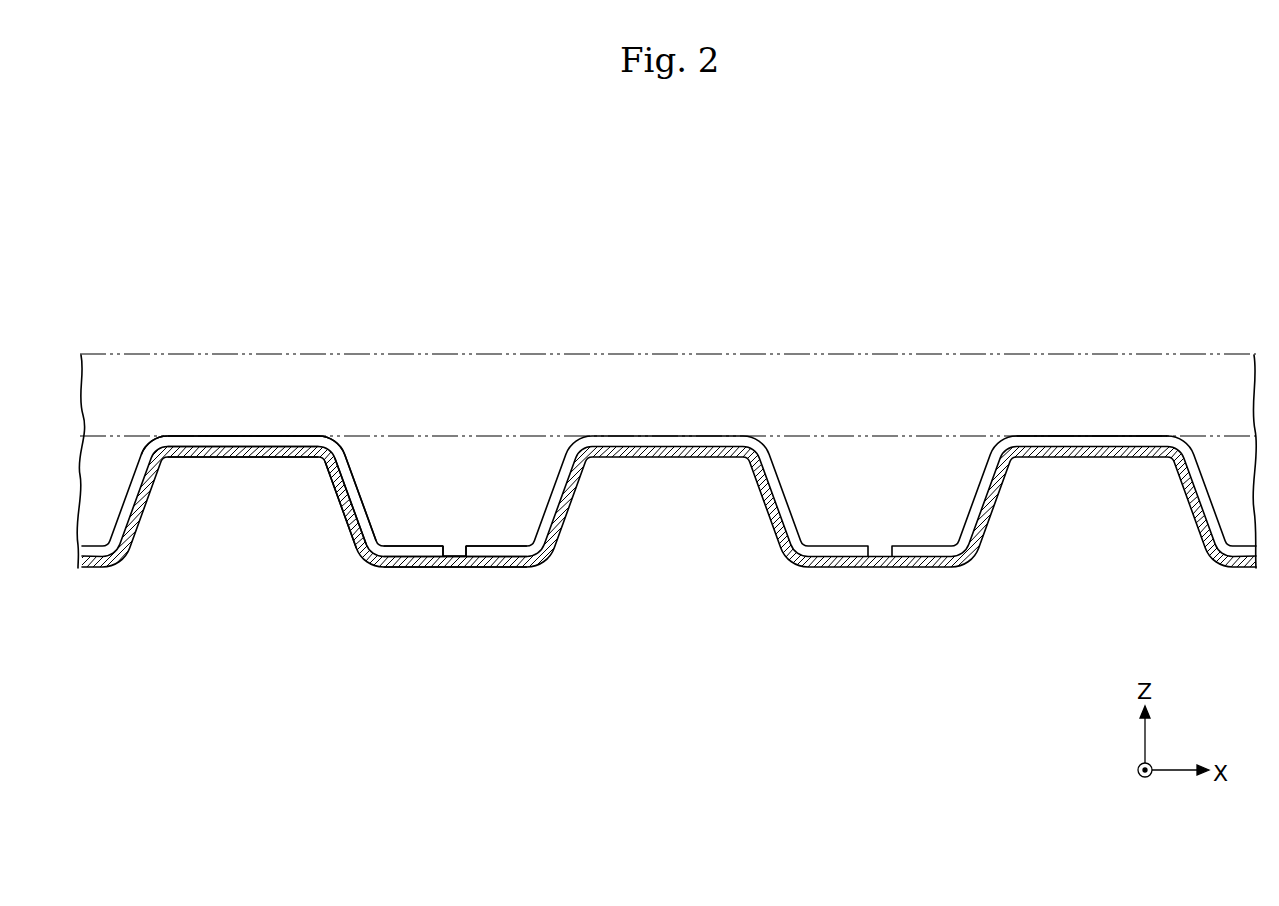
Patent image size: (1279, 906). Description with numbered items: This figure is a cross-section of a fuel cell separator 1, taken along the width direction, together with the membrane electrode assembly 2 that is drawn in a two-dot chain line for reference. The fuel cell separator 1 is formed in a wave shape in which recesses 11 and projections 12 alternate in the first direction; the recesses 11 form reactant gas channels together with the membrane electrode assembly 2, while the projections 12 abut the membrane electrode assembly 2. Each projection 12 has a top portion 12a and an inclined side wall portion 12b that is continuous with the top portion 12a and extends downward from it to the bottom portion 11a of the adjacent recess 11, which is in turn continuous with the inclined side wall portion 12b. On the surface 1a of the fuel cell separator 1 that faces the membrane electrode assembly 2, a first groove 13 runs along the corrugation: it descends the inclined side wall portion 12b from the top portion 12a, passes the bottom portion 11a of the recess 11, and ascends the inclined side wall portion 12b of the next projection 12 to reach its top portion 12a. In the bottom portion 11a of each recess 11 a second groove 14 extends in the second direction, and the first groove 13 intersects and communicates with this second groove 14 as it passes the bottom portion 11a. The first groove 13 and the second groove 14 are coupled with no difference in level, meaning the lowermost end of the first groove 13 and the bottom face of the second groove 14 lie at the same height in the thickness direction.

The fuel cell separator 1 is at (1131, 229).
The surface 1a is at (1076, 436).
The membrane electrode assembly 2 is at (860, 372).
The recess 11 is at (551, 497).
The bottom portion 11a is at (431, 547).
The projection 12 is at (207, 434).
The top portion 12a is at (252, 434).
The inclined side wall portion 12b is at (133, 497).
The first groove 13 is at (347, 465).
The second groove 14 is at (457, 547).